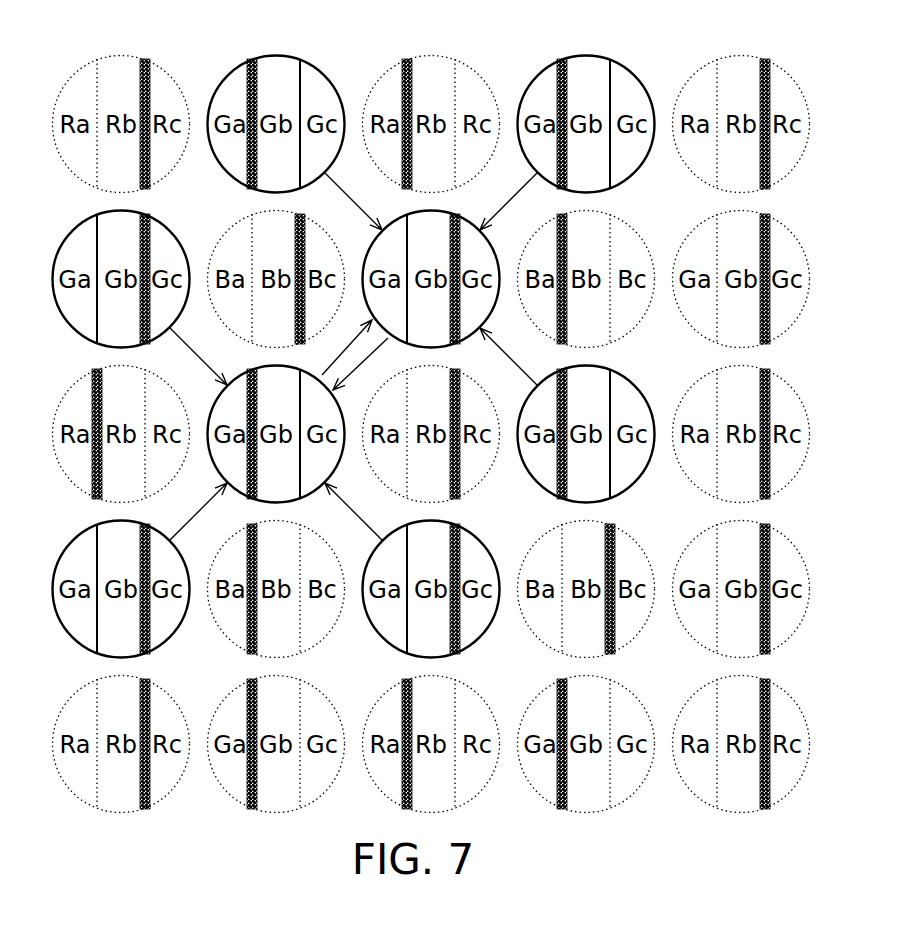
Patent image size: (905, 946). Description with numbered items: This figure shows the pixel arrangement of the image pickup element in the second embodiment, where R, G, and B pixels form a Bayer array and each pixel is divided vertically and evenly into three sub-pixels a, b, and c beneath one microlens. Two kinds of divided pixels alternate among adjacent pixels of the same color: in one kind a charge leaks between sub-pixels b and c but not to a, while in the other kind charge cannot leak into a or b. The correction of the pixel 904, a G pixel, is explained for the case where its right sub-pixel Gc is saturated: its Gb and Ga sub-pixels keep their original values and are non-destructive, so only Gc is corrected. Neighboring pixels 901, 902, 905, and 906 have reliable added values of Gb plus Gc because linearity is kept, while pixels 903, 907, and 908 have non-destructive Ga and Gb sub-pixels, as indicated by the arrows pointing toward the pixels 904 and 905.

The pixel 901 is at (247, 60).
The pixel 902 is at (542, 67).
The pixel 903 is at (75, 226).
The pixel 904 is at (390, 216).
The pixel 905 is at (238, 373).
The pixel 906 is at (632, 374).
The pixel 907 is at (82, 530).
The pixel 908 is at (478, 640).